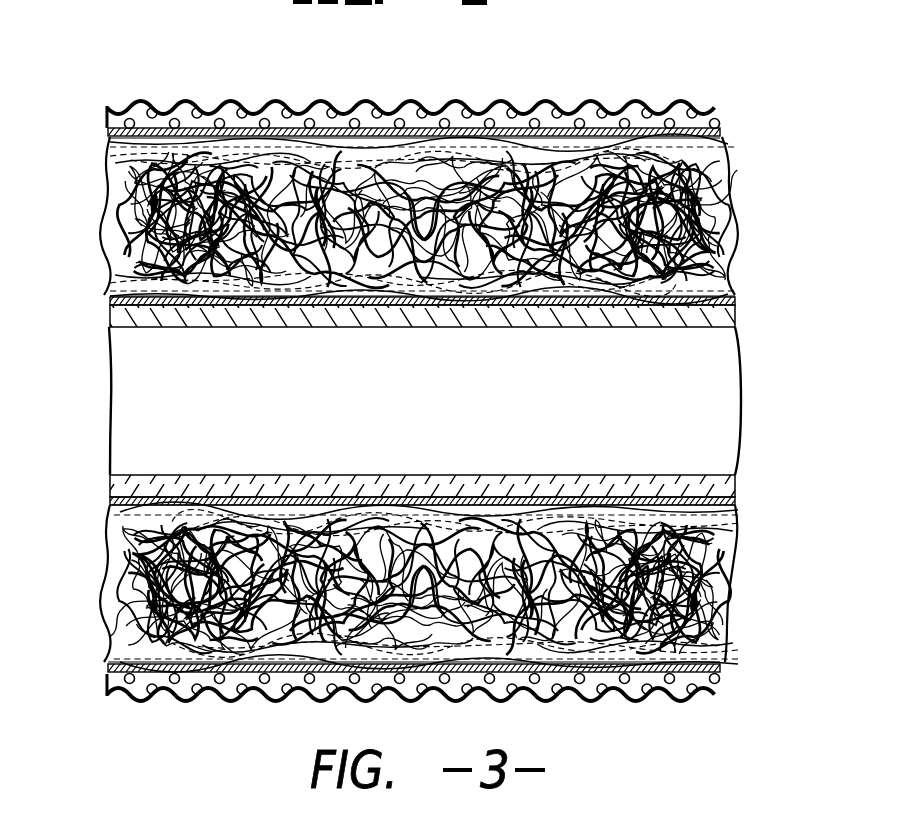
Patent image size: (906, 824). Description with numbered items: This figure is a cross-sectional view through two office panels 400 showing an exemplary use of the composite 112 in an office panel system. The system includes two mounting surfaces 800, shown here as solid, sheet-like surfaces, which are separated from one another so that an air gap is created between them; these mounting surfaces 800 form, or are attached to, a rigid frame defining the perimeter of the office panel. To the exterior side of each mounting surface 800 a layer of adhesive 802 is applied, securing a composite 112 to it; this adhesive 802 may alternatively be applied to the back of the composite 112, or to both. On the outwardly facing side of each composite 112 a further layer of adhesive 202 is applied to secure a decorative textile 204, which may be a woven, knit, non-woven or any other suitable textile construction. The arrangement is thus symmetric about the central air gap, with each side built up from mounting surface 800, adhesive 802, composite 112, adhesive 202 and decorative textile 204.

The composite laminate 400 is at (224, 68).
The decorative textile 204 is at (590, 103).
The layer of adhesive 202 is at (722, 131).
The composite 112 is at (88, 137).
The layer of adhesive 802 is at (738, 300).
The mounting surfaces 800 is at (108, 313).